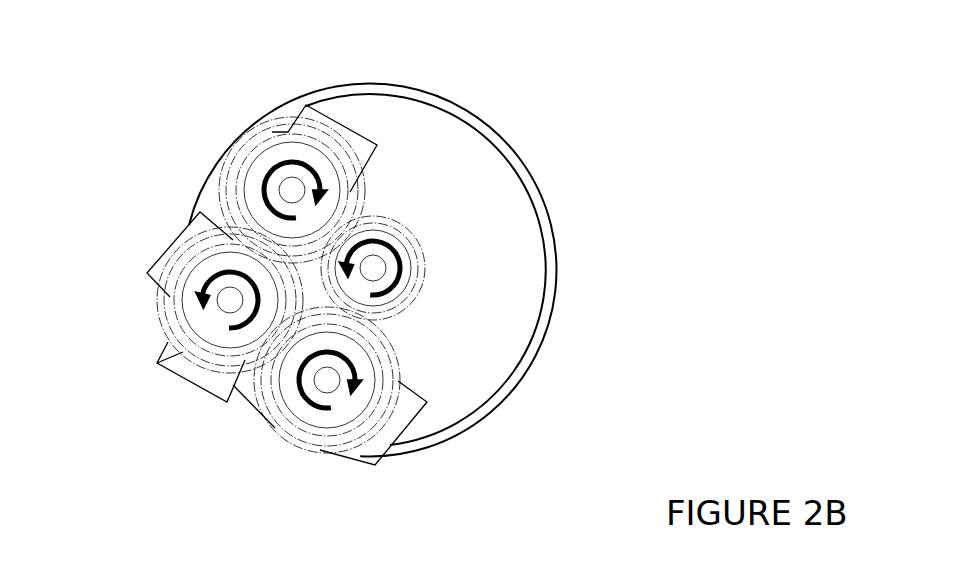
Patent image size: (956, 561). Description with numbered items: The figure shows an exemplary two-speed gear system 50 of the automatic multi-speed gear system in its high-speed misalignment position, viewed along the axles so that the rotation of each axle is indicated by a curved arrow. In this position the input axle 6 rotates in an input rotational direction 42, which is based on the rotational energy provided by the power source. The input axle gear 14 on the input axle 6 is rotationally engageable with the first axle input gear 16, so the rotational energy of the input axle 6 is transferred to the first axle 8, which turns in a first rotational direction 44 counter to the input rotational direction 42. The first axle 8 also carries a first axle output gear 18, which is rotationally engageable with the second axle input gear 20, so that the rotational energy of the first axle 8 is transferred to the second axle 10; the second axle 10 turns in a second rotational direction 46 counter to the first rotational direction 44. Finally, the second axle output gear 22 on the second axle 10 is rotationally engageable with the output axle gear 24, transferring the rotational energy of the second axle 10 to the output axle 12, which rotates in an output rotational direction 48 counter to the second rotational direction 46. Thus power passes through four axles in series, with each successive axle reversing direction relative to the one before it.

The two-speed gear system 50 is at (747, 110).
The second axle 10 is at (292, 190).
The second axle input gear 20 is at (260, 183).
The second axle output gear 22 is at (277, 131).
The second rotational direction 46 is at (322, 193).
The output axle gear 24 is at (378, 222).
The output axle 12 is at (373, 268).
The output rotational direction 48 is at (343, 269).
The first axle 8 is at (230, 302).
The first axle input gear 16 is at (228, 328).
The first axle output gear 18 is at (157, 363).
The first rotational direction 44 is at (258, 297).
The input axle 6 is at (327, 380).
The input axle gear 14 is at (351, 412).
The input rotational direction 42 is at (360, 382).